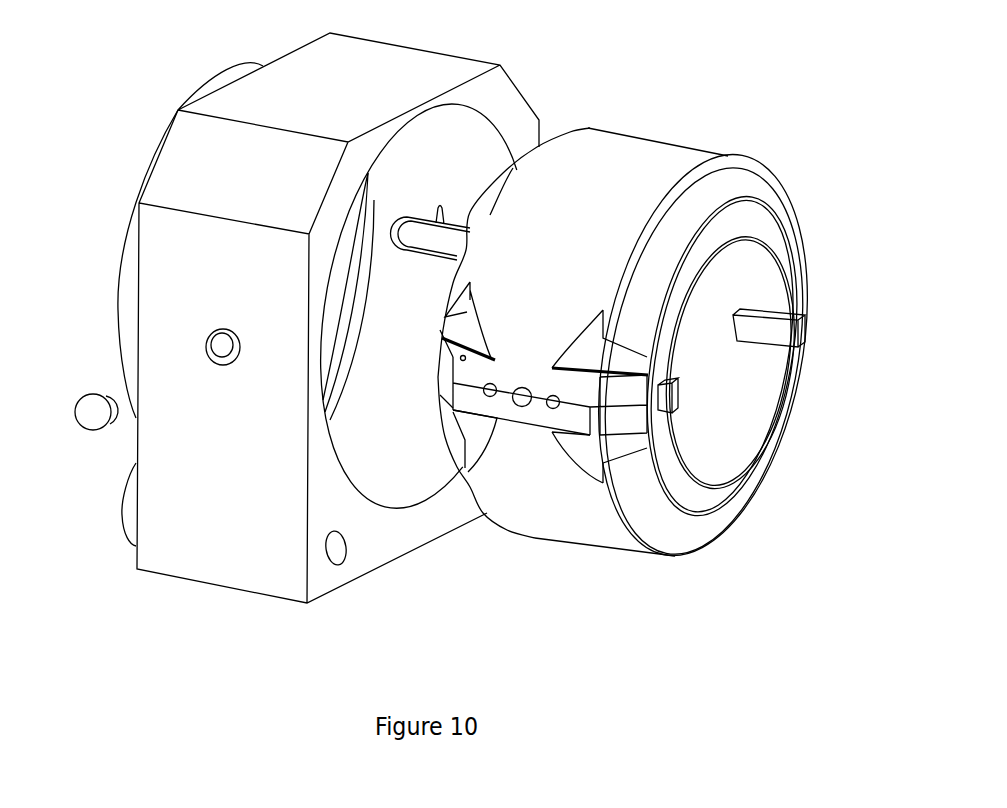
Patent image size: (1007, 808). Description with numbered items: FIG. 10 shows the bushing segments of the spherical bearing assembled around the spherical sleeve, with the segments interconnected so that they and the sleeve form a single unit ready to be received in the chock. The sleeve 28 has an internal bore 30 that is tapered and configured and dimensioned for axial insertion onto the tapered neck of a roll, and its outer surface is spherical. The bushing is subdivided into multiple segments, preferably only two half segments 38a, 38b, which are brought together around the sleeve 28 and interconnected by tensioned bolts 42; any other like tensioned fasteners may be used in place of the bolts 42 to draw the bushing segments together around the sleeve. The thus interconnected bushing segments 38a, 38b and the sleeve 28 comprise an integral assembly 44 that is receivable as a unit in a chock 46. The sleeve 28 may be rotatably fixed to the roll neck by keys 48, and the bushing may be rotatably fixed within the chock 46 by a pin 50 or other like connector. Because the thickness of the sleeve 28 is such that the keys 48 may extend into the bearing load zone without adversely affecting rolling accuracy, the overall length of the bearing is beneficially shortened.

The sleeve 28 is at (743, 485).
The internal bore 30 is at (766, 390).
The bushing half segment 38a is at (632, 147).
The bushing half segment 38b is at (555, 530).
The tensioned bolts 42 is at (584, 366).
The integral assembly 44 is at (652, 374).
The chock 46 is at (223, 577).
The keys 48 is at (802, 337).
The pin 50 is at (85, 410).